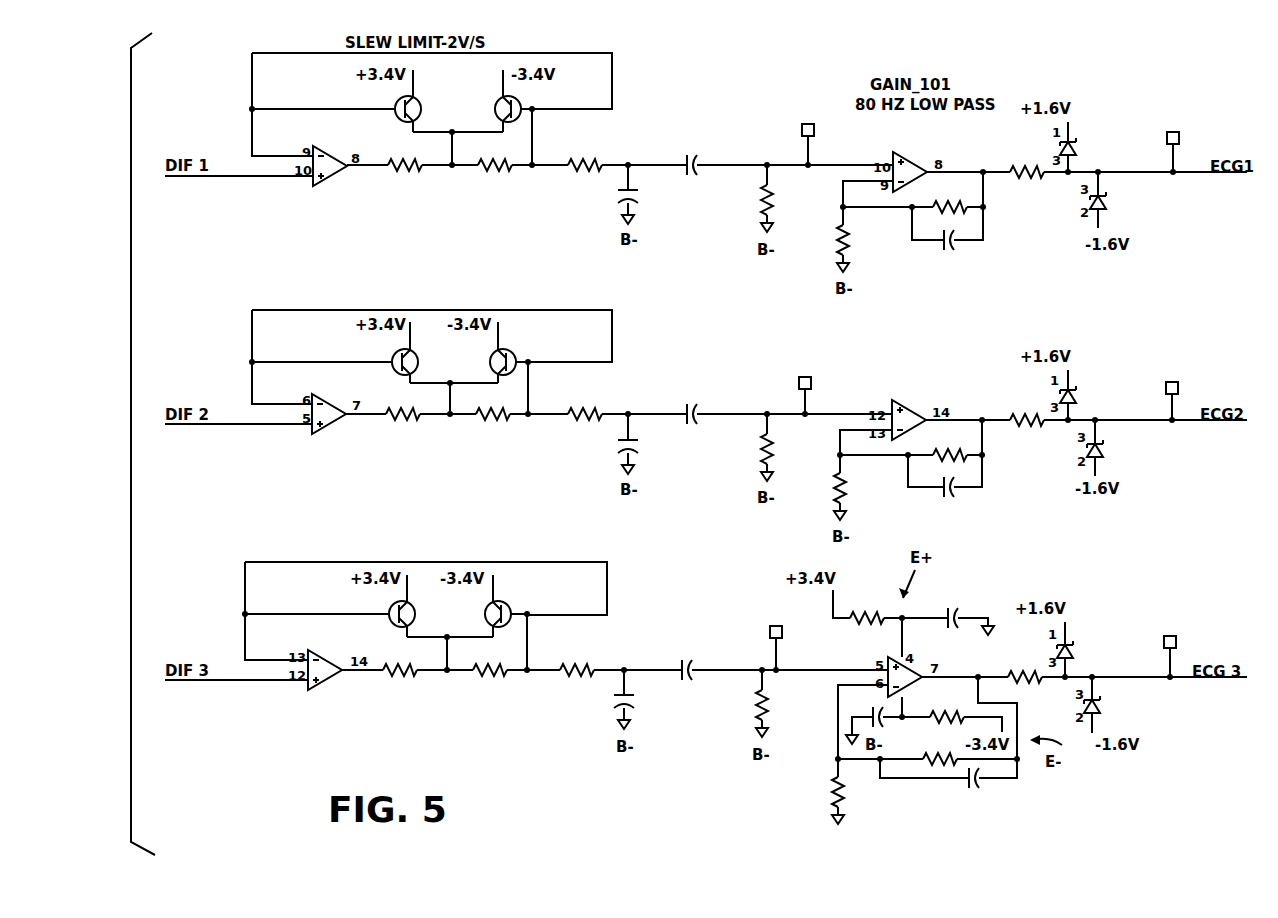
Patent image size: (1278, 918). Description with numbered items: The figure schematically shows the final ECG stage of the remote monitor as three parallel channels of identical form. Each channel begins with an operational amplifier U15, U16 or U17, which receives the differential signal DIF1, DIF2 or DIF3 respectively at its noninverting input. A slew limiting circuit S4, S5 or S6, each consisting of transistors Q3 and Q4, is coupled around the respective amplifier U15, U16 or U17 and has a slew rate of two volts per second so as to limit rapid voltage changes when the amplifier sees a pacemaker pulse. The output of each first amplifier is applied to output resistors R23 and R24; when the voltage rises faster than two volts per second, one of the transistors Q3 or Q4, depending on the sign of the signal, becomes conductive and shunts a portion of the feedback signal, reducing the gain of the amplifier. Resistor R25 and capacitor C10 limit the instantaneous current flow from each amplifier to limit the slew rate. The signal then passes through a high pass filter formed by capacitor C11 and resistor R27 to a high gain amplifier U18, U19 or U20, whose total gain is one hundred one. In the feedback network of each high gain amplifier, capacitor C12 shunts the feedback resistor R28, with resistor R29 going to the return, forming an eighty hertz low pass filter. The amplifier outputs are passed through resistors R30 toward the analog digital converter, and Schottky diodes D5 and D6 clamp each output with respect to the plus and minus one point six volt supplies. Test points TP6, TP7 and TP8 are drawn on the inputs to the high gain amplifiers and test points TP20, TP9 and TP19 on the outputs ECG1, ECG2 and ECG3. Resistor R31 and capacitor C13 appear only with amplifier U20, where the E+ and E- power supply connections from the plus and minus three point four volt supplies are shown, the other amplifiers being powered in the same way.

The output resistor R23 is at (402, 427).
The output resistor R24 is at (492, 428).
The resistor R25 is at (581, 407).
The resistor R27 is at (764, 452).
The feedback resistor R28 is at (942, 474).
The resistor R29 is at (841, 516).
The resistor R30 is at (1024, 433).
The resistor R31 is at (908, 658).
The capacitor C10 is at (607, 447).
The capacitor C11 is at (691, 406).
The capacitor C12 is at (963, 522).
The capacitor C13 is at (911, 657).
The transistor Q3 is at (402, 355).
The transistor Q4 is at (502, 355).
The operational amplifier U15 is at (337, 186).
The operational amplifier U16 is at (337, 434).
The operational amplifier U17 is at (333, 690).
The high gain amplifier U18 is at (918, 158).
The high gain amplifier U19 is at (917, 408).
The high gain amplifier U20 is at (898, 657).
The Schottky diode D5 is at (1077, 136).
The Schottky diode D6 is at (1111, 455).
The slew limiting circuit S4 is at (612, 73).
The slew limiting circuit S5 is at (612, 330).
The slew limiting circuit S6 is at (607, 580).
The test point TP6 is at (811, 121).
The test point TP7 is at (808, 373).
The test point TP8 is at (776, 623).
The test point TP9 is at (1171, 378).
The test point TP19 is at (1171, 633).
The test point TP20 is at (1174, 128).